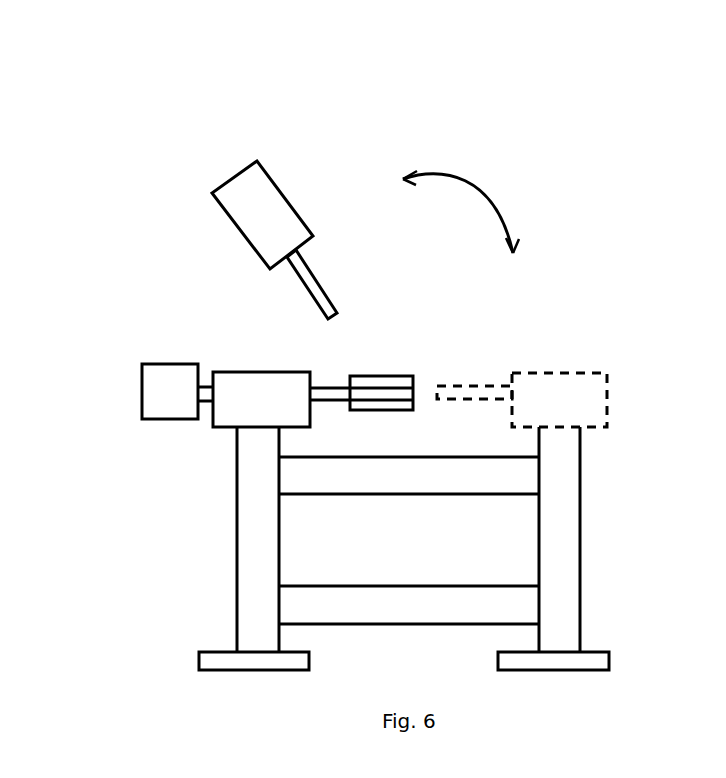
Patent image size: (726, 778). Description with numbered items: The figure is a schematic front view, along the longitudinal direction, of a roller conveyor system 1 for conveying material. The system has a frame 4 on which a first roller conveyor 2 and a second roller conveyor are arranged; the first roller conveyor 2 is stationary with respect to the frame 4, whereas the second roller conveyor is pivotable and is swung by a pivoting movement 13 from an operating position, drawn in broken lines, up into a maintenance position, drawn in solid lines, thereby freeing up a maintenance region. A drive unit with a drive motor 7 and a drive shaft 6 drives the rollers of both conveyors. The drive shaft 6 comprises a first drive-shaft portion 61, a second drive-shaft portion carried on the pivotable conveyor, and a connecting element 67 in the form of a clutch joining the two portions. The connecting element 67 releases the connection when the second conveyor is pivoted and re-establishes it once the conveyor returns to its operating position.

The roller conveyor system 1 is at (312, 107).
The pivoting movement 13 is at (475, 180).
The first drive-shaft portion 61 is at (333, 384).
The connecting element 67 is at (383, 375).
The drive motor 7 is at (167, 385).
The first roller conveyor 2 is at (240, 412).
The frame 4 is at (255, 558).
The drive shaft 6 is at (416, 443).